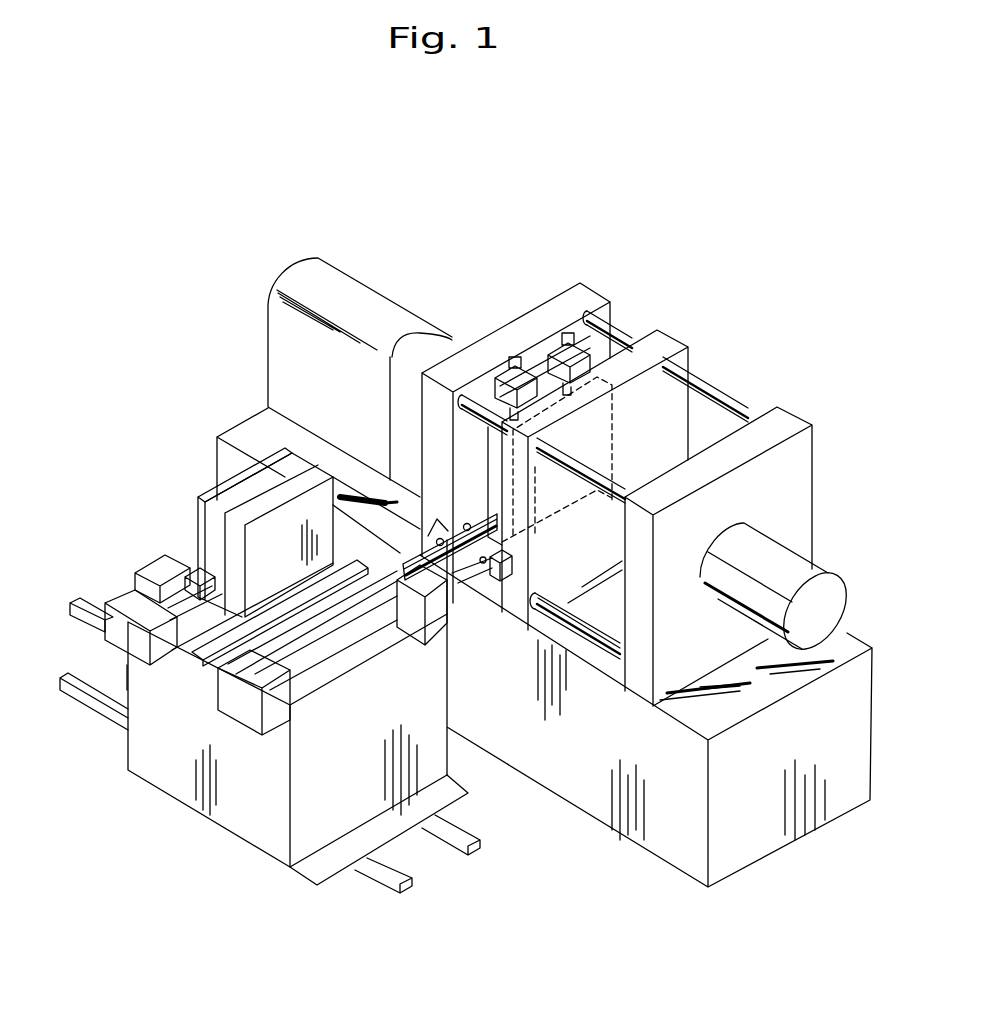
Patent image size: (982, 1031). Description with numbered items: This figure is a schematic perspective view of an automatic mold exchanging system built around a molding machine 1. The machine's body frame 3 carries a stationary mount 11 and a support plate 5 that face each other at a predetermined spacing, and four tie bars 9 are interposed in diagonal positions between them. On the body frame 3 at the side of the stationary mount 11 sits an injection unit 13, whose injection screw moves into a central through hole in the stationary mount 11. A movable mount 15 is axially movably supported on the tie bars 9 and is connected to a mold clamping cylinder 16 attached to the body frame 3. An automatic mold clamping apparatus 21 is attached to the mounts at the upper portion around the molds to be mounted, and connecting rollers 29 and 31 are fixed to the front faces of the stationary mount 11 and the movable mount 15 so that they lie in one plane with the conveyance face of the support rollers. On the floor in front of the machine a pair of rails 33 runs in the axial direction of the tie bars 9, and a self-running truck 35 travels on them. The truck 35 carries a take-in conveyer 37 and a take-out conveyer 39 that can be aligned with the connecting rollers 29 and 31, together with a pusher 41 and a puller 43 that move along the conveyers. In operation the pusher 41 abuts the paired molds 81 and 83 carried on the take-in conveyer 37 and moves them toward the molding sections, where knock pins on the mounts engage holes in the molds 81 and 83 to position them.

The molding machine 1 is at (447, 266).
The body frame 3 is at (214, 447).
The support plate 5 is at (788, 427).
The tie bars 9 is at (712, 397).
The stationary mount 11 is at (568, 308).
The injection unit 13 is at (388, 345).
The movable mount 15 is at (652, 353).
The mold clamping cylinder 16 is at (787, 578).
The automatic mold clamping apparatus 21 is at (553, 343).
The connecting roller 29 is at (262, 422).
The connecting roller 31 is at (487, 582).
The rails 33 is at (82, 673).
The truck 35 is at (123, 757).
The take-in conveyer 37 is at (137, 575).
The take-out conveyer 39 is at (278, 673).
The pusher 41 is at (193, 572).
The puller 43 is at (430, 607).
The mold 81 is at (227, 498).
The mold 83 is at (227, 553).